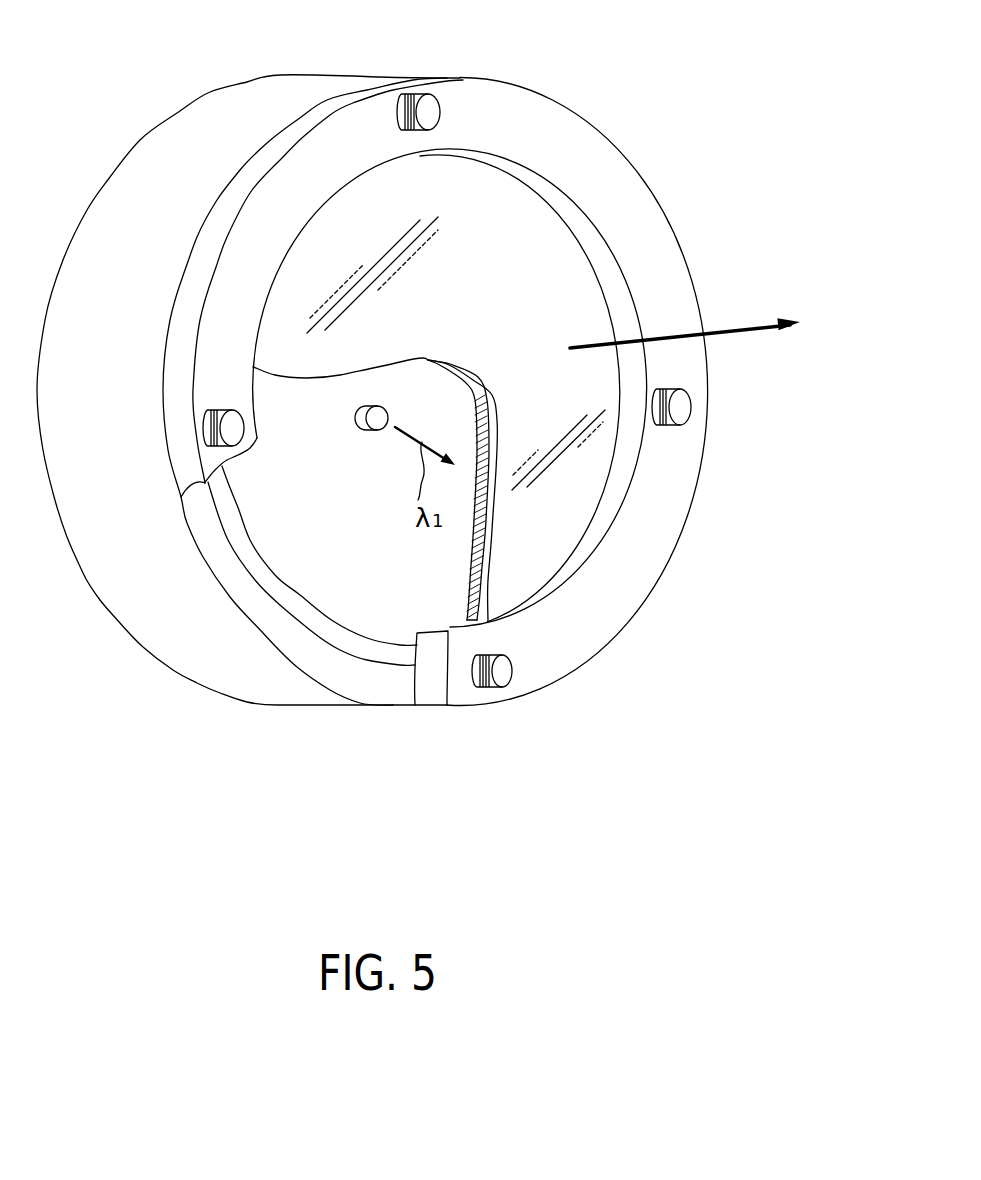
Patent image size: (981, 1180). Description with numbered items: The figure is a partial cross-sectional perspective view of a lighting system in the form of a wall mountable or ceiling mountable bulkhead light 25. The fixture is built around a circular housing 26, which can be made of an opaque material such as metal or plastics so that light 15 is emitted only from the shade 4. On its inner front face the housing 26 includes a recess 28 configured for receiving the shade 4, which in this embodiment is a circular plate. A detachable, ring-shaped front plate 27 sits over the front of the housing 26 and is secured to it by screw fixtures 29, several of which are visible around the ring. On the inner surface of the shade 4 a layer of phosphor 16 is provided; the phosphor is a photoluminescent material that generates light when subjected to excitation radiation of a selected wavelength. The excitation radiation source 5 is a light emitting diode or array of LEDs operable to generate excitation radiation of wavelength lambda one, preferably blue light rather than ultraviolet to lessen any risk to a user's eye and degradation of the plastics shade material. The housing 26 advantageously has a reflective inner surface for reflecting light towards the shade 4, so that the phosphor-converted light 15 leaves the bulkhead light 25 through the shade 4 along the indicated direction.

The shade 4 is at (513, 223).
The excitation radiation source 5 is at (355, 425).
The light 15 is at (740, 323).
The layer of phosphor 16 is at (467, 568).
The bulkhead light 25 is at (575, 764).
The housing 26 is at (260, 668).
The front plate 27 is at (652, 213).
The recess 28 is at (342, 636).
The screw fixtures 29 is at (683, 407).